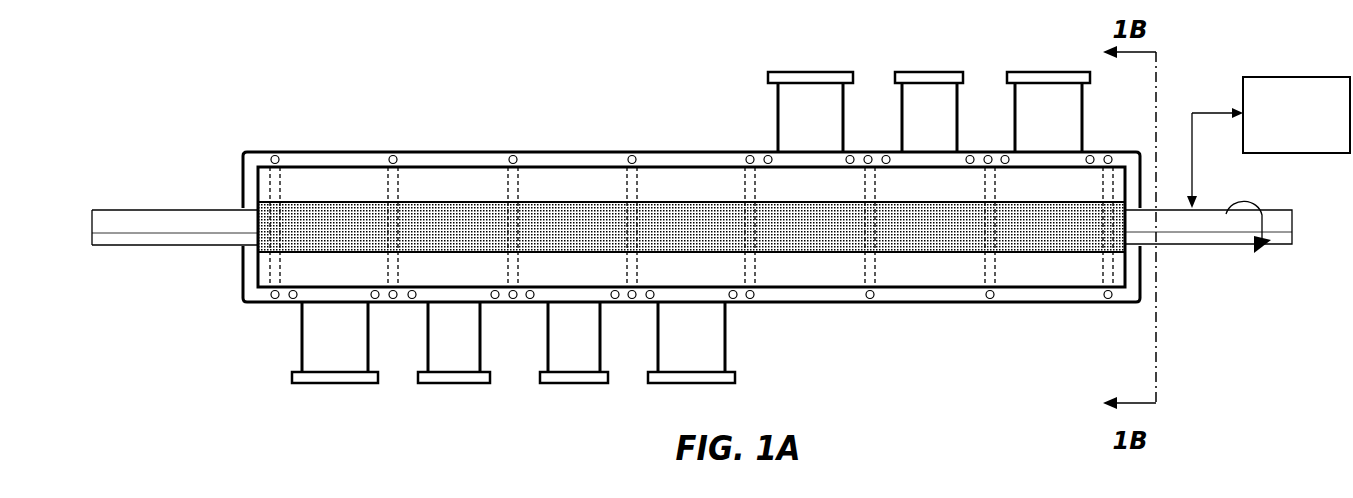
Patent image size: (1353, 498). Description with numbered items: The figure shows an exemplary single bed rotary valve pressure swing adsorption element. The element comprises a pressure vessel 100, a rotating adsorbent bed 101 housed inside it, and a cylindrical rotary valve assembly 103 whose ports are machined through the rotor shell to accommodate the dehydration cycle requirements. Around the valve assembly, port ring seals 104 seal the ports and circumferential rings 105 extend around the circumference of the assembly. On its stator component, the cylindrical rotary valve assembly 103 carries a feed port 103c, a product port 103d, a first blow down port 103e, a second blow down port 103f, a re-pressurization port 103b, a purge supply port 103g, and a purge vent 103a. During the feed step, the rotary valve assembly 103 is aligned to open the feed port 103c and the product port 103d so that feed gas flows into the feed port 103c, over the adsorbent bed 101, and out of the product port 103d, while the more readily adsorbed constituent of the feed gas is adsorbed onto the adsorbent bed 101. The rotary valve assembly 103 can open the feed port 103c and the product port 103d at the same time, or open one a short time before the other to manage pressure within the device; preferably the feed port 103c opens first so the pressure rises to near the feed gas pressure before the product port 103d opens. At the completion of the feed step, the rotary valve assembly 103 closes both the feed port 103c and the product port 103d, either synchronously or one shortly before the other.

The pressure vessel 100 is at (338, 150).
The rotating adsorbent bed 101 is at (572, 215).
The cylindrical rotary valve assembly 103 is at (449, 150).
The purge vent 103a is at (806, 71).
The re-pressurization port 103b is at (926, 71).
The feed port 103c is at (1046, 71).
The product port 103d is at (322, 385).
The first blow down port 103e is at (455, 385).
The second blow down port 103f is at (578, 385).
The purge supply port 103g is at (683, 385).
The port ring seal 104 is at (850, 165).
The circumferential ring 105 is at (275, 155).